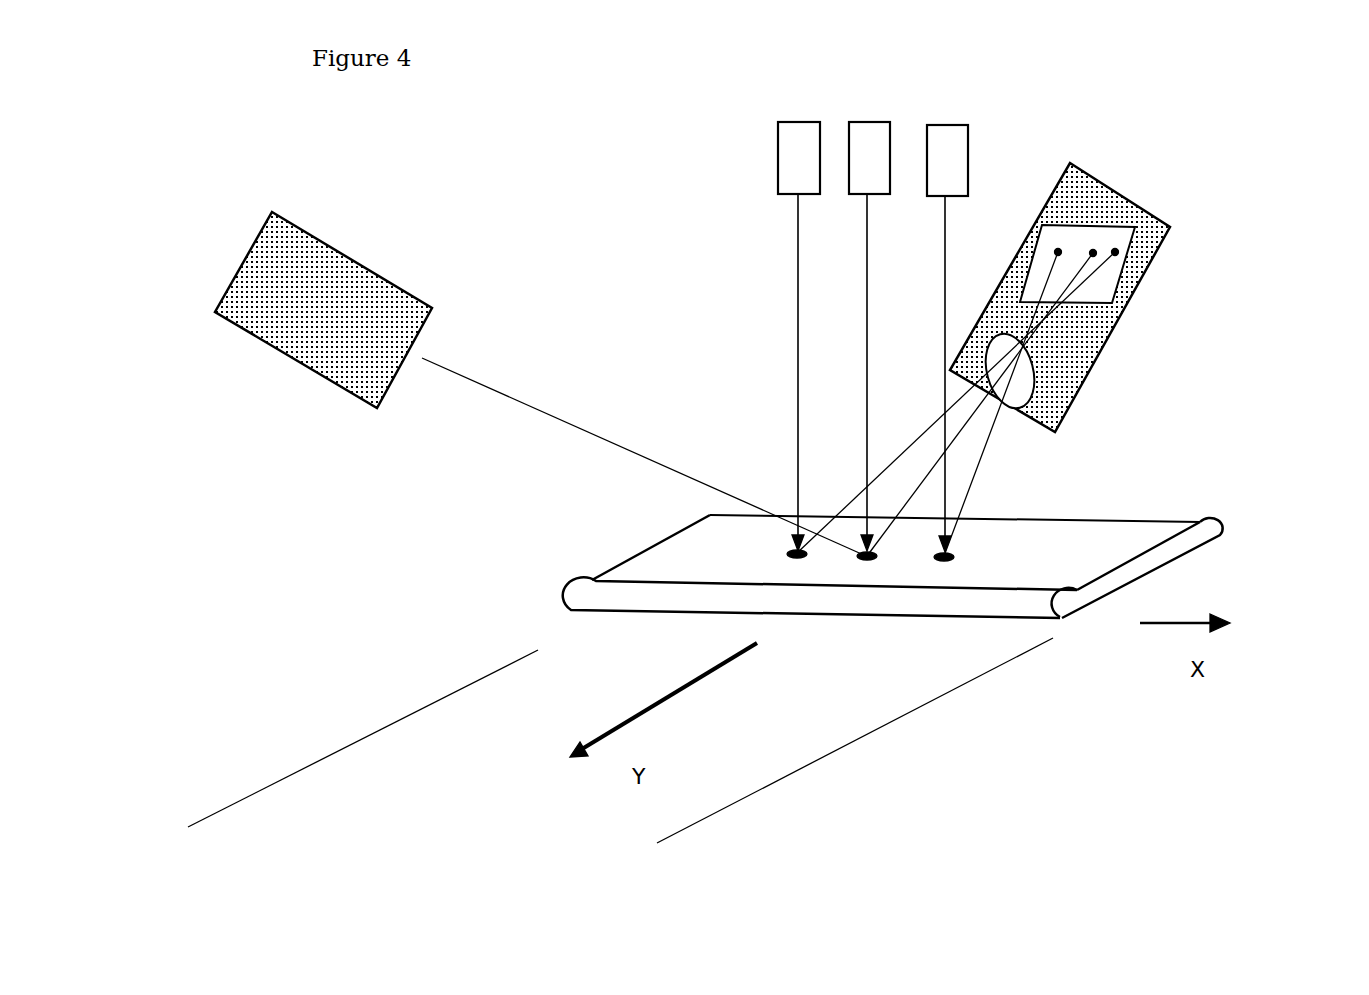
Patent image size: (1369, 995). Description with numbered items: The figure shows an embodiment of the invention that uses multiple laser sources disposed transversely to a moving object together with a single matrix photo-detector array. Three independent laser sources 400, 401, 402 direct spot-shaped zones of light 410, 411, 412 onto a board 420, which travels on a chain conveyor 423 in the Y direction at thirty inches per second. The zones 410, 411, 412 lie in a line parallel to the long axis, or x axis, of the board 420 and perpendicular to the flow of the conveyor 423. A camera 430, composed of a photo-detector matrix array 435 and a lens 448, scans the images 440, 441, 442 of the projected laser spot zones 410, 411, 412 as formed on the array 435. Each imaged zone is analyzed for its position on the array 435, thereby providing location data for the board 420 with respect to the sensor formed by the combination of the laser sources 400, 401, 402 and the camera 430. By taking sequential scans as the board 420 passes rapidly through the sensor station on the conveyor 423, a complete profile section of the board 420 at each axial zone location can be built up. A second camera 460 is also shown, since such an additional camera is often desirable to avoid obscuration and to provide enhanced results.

The laser source 400 is at (786, 118).
The laser source 401 is at (870, 120).
The laser source 402 is at (944, 123).
The zone of light 410 is at (793, 566).
The zone of light 411 is at (873, 568).
The zone of light 412 is at (953, 570).
The board 420 is at (632, 553).
The chain conveyor 423 is at (893, 723).
The camera 430 is at (1097, 178).
The photo-detector matrix array 435 is at (1103, 223).
The image of projected laser spot zone 440 is at (1056, 250).
The image of projected laser spot zone 441 is at (1090, 250).
The image of projected laser spot zone 442 is at (1120, 250).
The lens 448 is at (1033, 393).
The second camera 460 is at (275, 350).